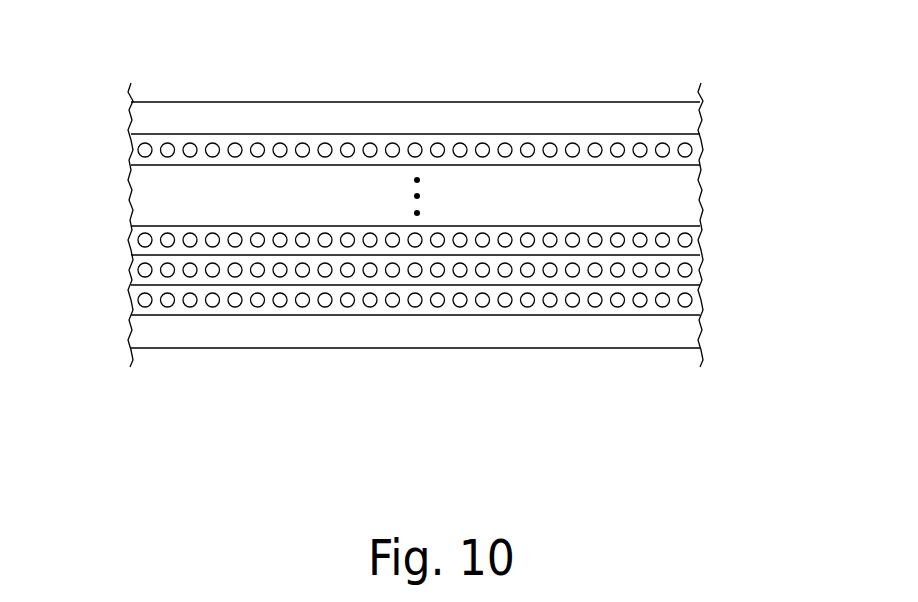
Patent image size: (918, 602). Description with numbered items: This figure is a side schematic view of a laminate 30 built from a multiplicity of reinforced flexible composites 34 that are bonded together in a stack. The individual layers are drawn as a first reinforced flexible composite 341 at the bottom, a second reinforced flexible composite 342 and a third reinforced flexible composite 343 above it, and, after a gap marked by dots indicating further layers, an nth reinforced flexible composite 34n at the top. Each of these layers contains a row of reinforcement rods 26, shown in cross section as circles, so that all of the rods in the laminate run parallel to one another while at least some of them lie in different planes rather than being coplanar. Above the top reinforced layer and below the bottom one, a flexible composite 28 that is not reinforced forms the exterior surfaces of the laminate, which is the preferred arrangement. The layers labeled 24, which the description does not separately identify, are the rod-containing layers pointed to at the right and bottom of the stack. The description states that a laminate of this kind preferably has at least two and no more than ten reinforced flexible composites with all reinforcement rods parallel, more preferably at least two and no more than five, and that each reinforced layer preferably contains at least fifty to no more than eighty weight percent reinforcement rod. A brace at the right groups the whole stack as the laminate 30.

The layer with fibers 24 is at (697, 155).
The reinforcement rods 26 is at (168, 150).
The flexible composite 28 is at (465, 115).
The laminate 30 is at (805, 83).
The reinforced flexible composite 34 is at (360, 225).
The reinforced flexible composite 34n is at (132, 158).
The reinforced flexible composite 343 is at (132, 228).
The reinforced flexible composite 342 is at (132, 258).
The reinforced flexible composite 341 is at (130, 291).